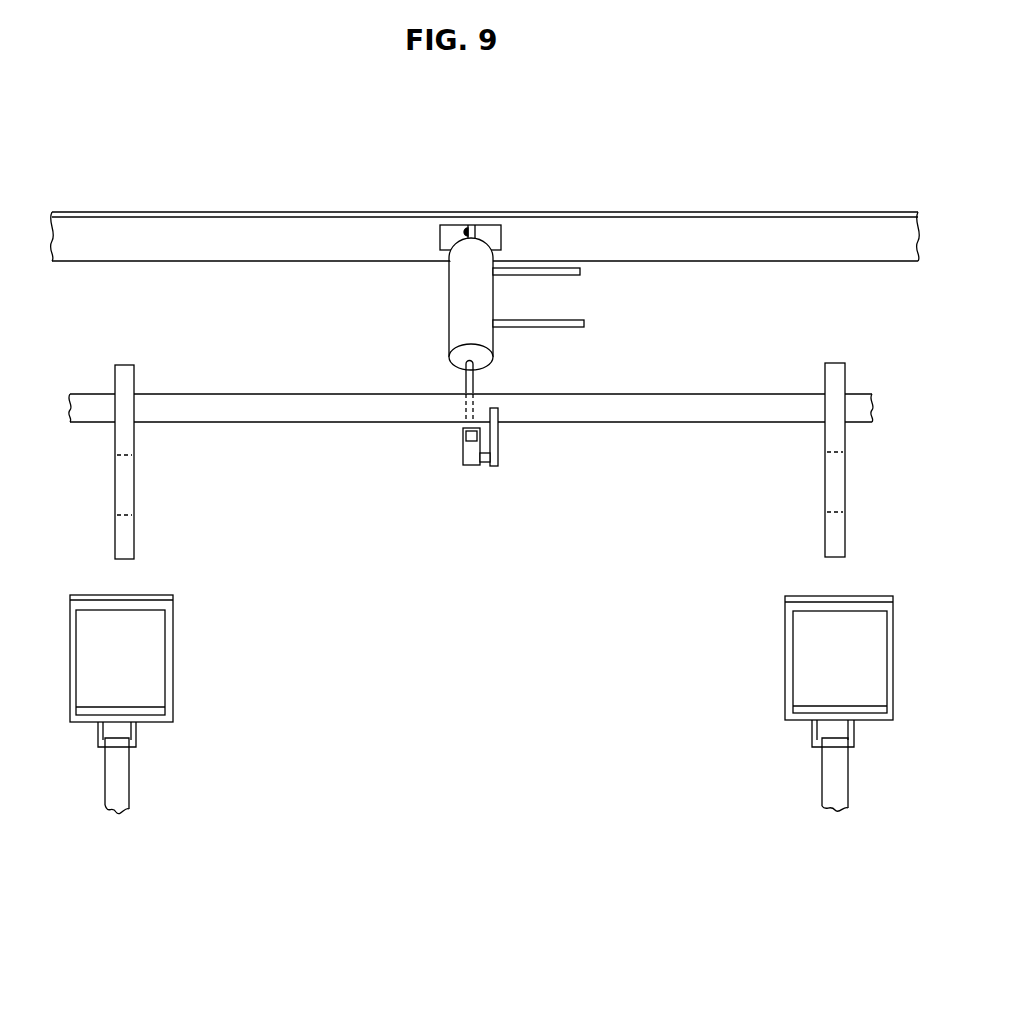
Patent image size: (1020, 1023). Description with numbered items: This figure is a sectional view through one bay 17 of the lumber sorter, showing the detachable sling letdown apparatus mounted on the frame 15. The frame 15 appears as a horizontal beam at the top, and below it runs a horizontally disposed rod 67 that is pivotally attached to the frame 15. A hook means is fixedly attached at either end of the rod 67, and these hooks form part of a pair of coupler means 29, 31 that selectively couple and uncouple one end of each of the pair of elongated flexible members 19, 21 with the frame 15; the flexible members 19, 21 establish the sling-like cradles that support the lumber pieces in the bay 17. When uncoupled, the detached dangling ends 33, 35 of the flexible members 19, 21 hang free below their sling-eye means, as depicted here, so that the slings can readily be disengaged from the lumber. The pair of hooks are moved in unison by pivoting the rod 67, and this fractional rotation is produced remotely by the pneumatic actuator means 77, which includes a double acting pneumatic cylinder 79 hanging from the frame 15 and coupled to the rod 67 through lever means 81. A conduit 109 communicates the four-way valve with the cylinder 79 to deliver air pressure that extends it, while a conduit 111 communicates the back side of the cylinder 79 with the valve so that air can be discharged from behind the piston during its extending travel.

The frame 15 is at (847, 246).
The bay 17 is at (471, 687).
The elongated flexible member 19 is at (140, 727).
The elongated flexible member 21 is at (815, 735).
The coupler means 29 is at (189, 431).
The coupler means 31 is at (782, 438).
The dangling end 33 is at (120, 775).
The dangling end 35 is at (828, 770).
The horizontally disposed rod 67 is at (650, 412).
The pneumatic actuator means 77 is at (461, 321).
The double acting pneumatic cylinder 79 is at (470, 323).
The lever means 81 is at (493, 441).
The conduit 109 is at (551, 268).
The conduit 111 is at (570, 329).